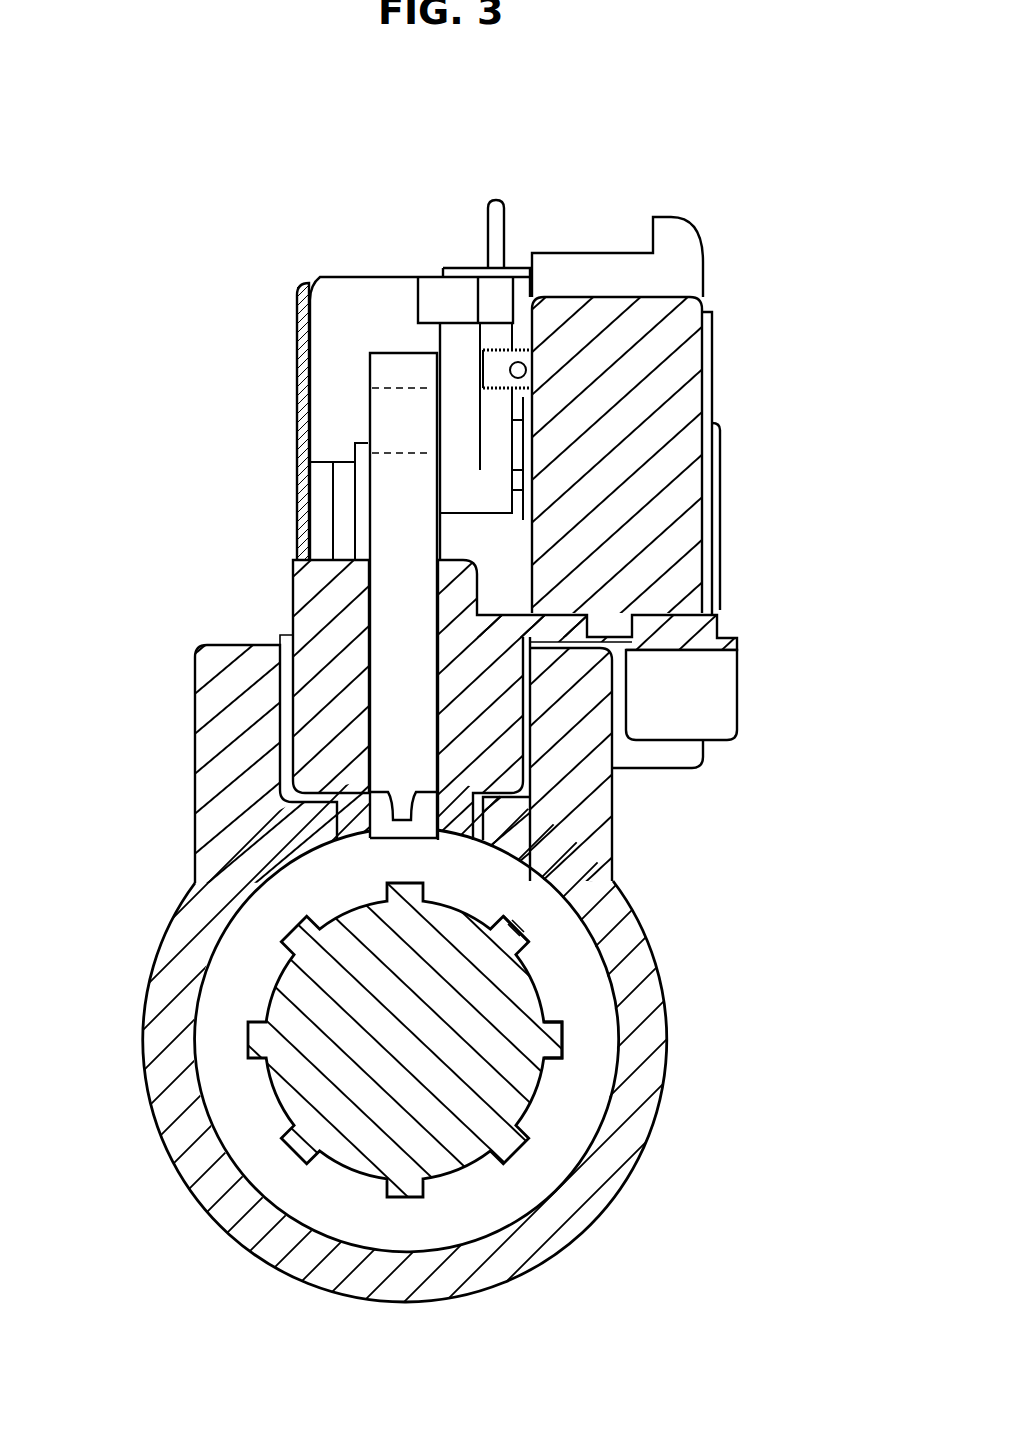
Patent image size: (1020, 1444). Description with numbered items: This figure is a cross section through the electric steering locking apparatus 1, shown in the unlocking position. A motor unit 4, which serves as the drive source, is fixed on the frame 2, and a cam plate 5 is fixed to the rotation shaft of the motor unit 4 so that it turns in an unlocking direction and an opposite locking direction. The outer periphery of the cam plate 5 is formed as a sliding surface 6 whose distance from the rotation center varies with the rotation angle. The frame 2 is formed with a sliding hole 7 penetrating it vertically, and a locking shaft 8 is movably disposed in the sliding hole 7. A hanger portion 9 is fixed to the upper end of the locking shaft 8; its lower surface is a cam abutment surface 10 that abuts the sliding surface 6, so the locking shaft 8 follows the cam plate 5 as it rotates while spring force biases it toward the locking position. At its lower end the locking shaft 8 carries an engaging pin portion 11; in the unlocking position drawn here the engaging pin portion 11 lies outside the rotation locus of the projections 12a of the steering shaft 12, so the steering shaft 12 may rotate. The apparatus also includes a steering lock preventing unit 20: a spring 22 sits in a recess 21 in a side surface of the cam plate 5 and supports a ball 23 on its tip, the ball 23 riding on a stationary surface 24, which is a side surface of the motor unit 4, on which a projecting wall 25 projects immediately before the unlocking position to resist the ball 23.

The electric steering locking apparatus 1 is at (268, 228).
The frame 2 is at (312, 708).
The motor unit 4 is at (613, 306).
The cam plate 5 is at (522, 468).
The sliding surface 6 is at (460, 352).
The sliding hole 7 is at (367, 637).
The locking shaft 8 is at (387, 517).
The hanger portion 9 is at (322, 357).
The cam abutment surface 10 is at (430, 323).
The engaging pin portion 11 is at (405, 822).
The steering shaft 12 is at (523, 1082).
The projections 12a is at (518, 930).
The steering lock preventing unit 20 is at (555, 355).
The recess 21 is at (497, 368).
The spring 22 is at (483, 397).
The ball 23 is at (535, 375).
The stationary surface 24 is at (520, 527).
The projecting wall 25 is at (520, 356).